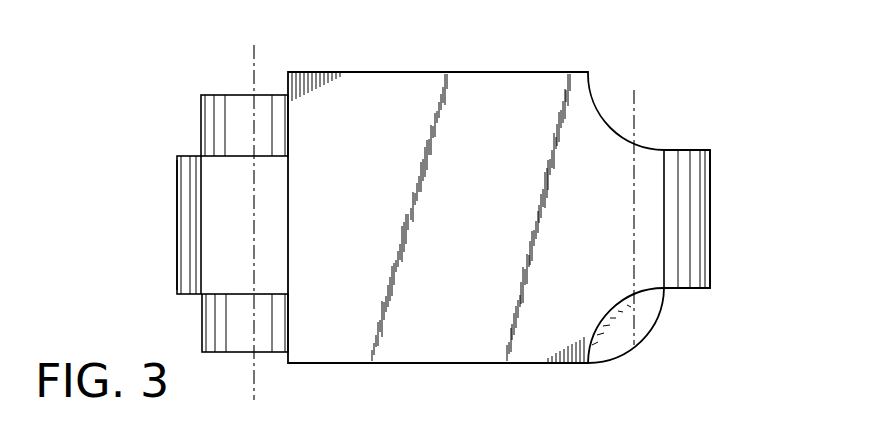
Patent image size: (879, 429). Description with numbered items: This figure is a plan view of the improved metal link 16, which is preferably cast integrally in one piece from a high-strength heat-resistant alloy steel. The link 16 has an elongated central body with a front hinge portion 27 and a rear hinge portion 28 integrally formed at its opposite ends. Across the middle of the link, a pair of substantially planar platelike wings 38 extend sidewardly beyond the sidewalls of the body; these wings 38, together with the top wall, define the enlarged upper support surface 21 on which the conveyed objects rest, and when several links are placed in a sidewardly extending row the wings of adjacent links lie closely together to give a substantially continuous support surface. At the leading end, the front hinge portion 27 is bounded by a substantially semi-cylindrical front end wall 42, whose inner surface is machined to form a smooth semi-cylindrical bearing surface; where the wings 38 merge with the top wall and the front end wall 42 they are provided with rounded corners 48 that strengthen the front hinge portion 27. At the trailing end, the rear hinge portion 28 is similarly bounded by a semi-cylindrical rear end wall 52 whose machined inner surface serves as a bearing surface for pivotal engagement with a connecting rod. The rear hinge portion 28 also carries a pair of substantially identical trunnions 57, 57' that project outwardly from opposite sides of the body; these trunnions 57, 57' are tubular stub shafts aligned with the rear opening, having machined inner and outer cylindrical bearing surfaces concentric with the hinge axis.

The link 16 is at (676, 78).
The upper support surface 21 is at (461, 217).
The wings 38 is at (516, 80).
The trunnion 57 is at (244, 349).
The trunnion 57' is at (232, 105).
The rear hinge portion 28 is at (174, 190).
The rear end wall 52 is at (205, 244).
The front hinge portion 27 is at (718, 160).
The front end wall 42 is at (690, 228).
The rounded corners 48 is at (613, 305).